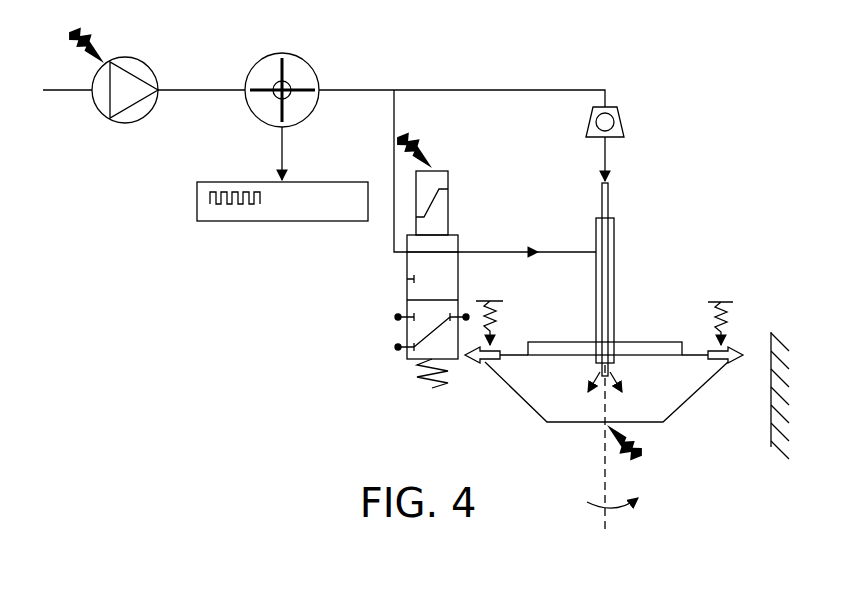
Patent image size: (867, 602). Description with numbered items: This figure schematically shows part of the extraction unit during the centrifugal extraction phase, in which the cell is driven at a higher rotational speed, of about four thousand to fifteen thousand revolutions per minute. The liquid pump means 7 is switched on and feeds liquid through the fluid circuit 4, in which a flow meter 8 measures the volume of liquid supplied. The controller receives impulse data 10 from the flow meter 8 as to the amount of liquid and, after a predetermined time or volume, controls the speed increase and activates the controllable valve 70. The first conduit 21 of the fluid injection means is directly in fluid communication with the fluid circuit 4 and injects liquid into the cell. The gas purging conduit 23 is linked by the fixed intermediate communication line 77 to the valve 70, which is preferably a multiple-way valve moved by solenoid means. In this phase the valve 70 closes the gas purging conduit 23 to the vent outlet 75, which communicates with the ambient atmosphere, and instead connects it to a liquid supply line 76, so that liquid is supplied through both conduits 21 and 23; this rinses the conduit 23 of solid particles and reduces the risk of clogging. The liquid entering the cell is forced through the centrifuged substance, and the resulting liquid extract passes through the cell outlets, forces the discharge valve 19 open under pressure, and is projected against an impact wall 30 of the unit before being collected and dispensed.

The fluid circuit 4 is at (504, 90).
The liquid pump means 7 is at (122, 57).
The flow meter 8 is at (283, 53).
The impulse data 10 is at (197, 196).
The discharge valve 19 is at (733, 305).
The first conduit 21 is at (612, 200).
The gas purging conduit 23 is at (616, 312).
The impact wall 30 is at (771, 431).
The controllable valve 70 is at (340, 281).
The vent outlet 75 is at (398, 347).
The liquid supply line 76 is at (394, 147).
The intermediate communication line 77 is at (514, 250).